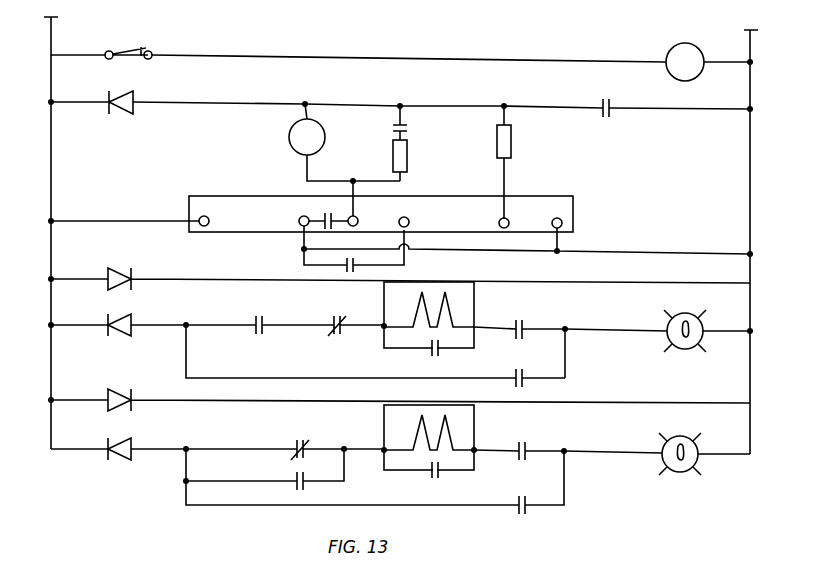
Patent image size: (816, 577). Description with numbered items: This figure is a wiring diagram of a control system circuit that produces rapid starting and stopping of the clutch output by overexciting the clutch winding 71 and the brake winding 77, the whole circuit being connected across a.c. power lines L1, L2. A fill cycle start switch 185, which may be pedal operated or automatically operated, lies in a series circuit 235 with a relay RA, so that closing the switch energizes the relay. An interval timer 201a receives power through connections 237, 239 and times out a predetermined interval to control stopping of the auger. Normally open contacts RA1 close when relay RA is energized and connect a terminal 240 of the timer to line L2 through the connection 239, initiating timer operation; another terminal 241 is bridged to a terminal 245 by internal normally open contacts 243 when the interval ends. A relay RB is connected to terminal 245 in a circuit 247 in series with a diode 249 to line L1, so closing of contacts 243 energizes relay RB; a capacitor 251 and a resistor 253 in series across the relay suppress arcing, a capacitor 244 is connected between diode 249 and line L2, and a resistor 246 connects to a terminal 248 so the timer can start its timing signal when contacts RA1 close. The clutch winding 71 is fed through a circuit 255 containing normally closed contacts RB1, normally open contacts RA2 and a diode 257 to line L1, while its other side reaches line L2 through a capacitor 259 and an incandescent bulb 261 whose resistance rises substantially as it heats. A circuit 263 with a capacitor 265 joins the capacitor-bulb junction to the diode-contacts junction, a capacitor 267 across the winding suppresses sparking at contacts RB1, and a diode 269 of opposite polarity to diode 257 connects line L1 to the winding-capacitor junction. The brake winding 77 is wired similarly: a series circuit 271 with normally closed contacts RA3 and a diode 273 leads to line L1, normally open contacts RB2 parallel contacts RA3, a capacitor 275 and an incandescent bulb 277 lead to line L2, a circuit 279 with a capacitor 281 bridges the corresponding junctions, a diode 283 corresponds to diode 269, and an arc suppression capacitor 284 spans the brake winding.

The a.c. power line L1 is at (51, 184).
The a.c. power line L2 is at (750, 185).
The fill cycle start switch 185 is at (137, 50).
The series circuit 235 is at (333, 46).
The relay RA is at (672, 80).
The diode 249 is at (128, 115).
The circuit 247 is at (247, 104).
The capacitor 244 is at (612, 118).
The relay RB is at (329, 160).
The capacitor 251 is at (408, 125).
The resistor 253 is at (408, 160).
The resistor 246 is at (512, 150).
The interval timer 201a is at (580, 200).
The connection 237 is at (118, 222).
The terminal 241 is at (299, 222).
The normally open contacts 243 is at (327, 215).
The terminal 245 is at (358, 216).
The terminal 240 is at (409, 224).
The terminal 248 is at (509, 220).
The normally open contacts RA1 is at (348, 272).
The connection 239 is at (660, 254).
The diode 269 is at (116, 270).
The diode 257 is at (136, 346).
The circuit 255 is at (236, 312).
The normally open contacts RA2 is at (258, 338).
The normally closed contacts RB1 is at (340, 338).
The clutch winding 71 is at (416, 313).
The capacitor 267 is at (426, 358).
The capacitor 259 is at (508, 322).
The incandescent bulb 261 is at (668, 362).
The circuit 263 is at (566, 366).
The capacitor 265 is at (510, 390).
The diode 283 is at (116, 392).
The diode 273 is at (128, 462).
The series circuit 271 is at (246, 450).
The normally closed contacts RA3 is at (300, 438).
The normally open contacts RB2 is at (304, 490).
The brake winding 77 is at (416, 437).
The arc suppression capacitor 284 is at (426, 480).
The capacitor 275 is at (532, 444).
The incandescent bulb 277 is at (662, 488).
The circuit 279 is at (438, 504).
The capacitor 281 is at (514, 518).